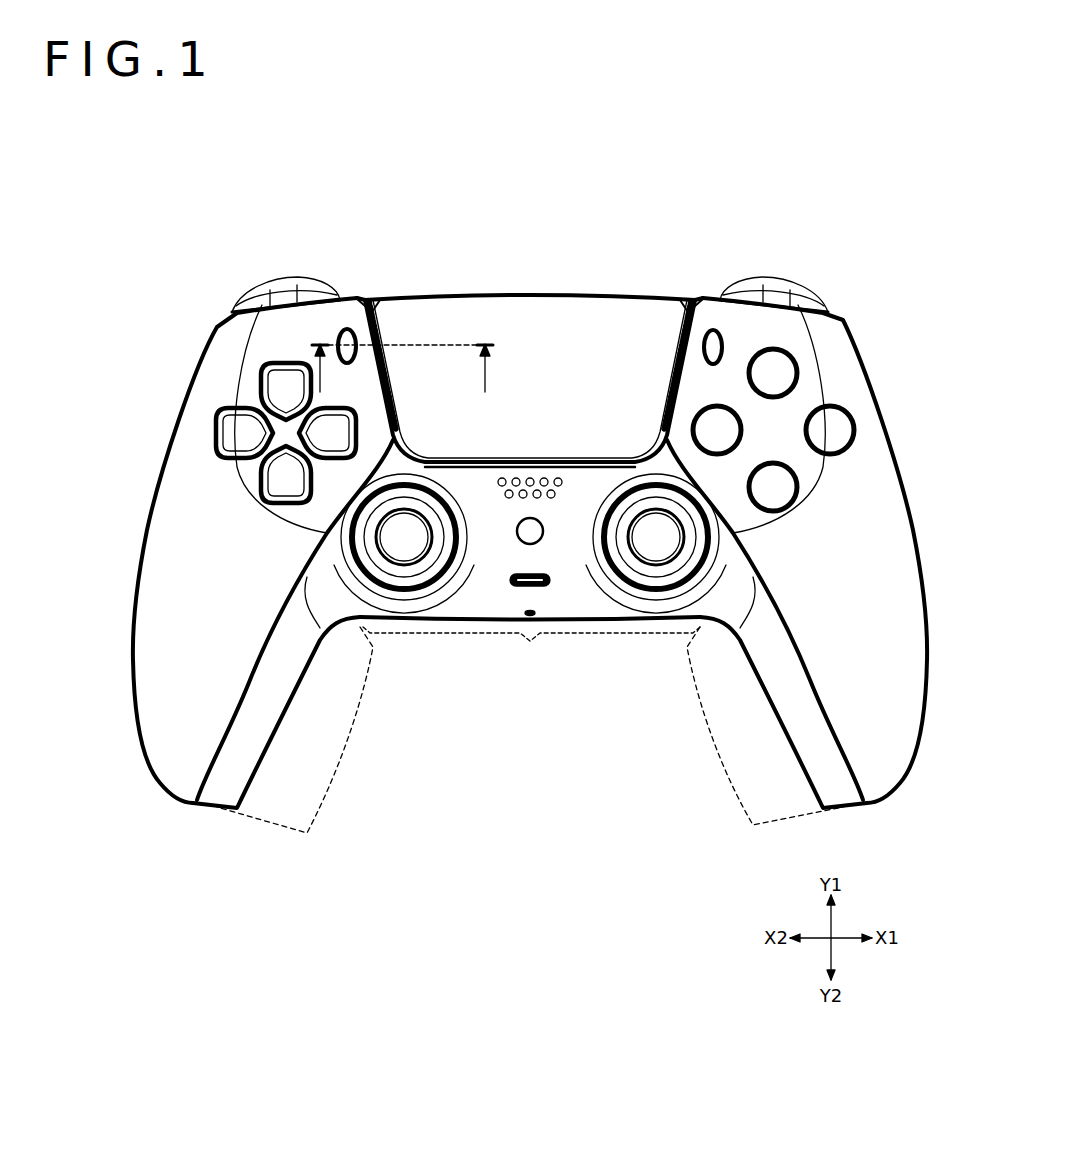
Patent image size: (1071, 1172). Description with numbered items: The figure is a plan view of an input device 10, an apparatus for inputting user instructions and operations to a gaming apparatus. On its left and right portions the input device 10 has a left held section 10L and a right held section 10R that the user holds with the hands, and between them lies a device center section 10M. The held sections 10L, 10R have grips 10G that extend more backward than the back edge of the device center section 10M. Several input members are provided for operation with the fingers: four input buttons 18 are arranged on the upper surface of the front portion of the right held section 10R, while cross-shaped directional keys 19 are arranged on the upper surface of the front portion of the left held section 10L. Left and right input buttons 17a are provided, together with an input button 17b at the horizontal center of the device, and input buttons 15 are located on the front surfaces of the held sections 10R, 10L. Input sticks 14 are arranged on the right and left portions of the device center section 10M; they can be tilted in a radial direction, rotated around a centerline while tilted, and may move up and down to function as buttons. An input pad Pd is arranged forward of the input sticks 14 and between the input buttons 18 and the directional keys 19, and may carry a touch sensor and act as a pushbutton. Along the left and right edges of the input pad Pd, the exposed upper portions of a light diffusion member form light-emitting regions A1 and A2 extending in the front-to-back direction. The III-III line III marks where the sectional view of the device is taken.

The input device 10 is at (525, 519).
The left held section 10L is at (192, 364).
The right held section 10R is at (857, 338).
The device center section 10M is at (530, 642).
The grips 10G is at (350, 745).
The input sticks 14 is at (397, 540).
The input buttons 15 is at (285, 284).
The left and right input buttons 17a is at (346, 336).
The input button 17b is at (523, 541).
The input buttons 18 is at (790, 378).
The directional keys 19 is at (222, 426).
The input pad Pd is at (541, 300).
The light-emitting region A1 is at (392, 388).
The light-emitting region A2 is at (674, 363).
The III-III line III is at (311, 398).